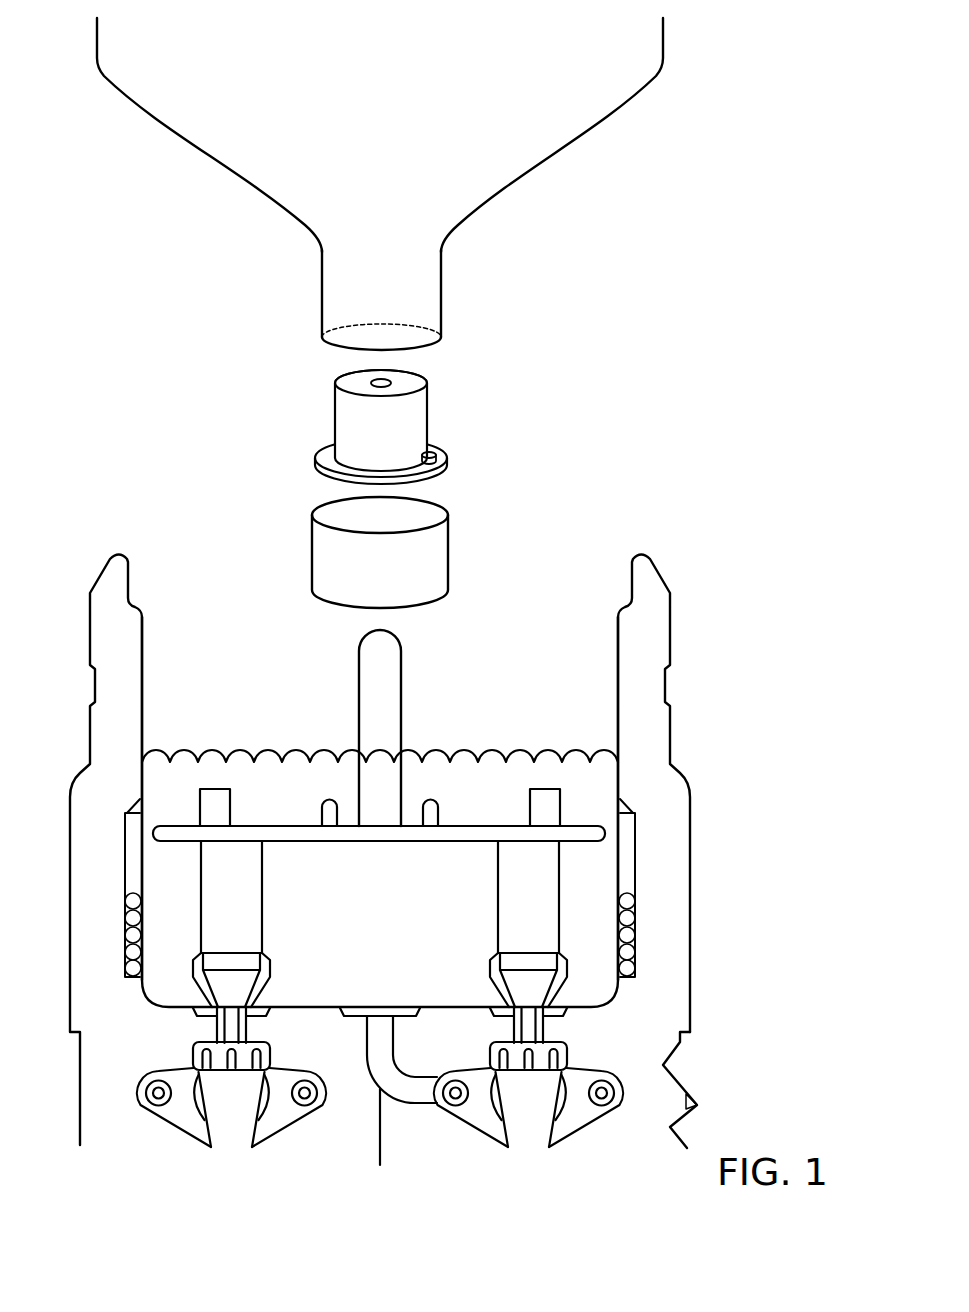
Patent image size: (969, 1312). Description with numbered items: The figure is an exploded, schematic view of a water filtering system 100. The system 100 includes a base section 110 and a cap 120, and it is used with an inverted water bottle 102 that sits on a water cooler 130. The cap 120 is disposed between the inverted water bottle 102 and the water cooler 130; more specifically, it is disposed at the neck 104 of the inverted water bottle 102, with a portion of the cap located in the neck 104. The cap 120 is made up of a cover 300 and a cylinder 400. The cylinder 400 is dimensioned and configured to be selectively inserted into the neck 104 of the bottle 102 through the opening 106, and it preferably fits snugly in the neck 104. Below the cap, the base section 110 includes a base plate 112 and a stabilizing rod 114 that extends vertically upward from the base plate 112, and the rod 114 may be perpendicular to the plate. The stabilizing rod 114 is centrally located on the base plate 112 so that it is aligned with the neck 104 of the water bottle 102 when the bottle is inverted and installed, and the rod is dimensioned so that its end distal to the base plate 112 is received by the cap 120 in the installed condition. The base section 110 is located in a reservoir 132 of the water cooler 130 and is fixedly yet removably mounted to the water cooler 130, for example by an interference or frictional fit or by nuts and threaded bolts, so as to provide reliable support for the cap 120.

The water filtering system 100 is at (135, 343).
The inverted water bottle 102 is at (663, 63).
The neck 104 is at (441, 311).
The opening 106 is at (347, 352).
The cap 120 is at (270, 487).
The cylinder 400 is at (427, 418).
The cover 300 is at (448, 567).
The base section 110 is at (288, 653).
The reservoir 132 is at (593, 893).
The stabilizing rod 114 is at (402, 710).
The base plate 112 is at (300, 826).
The water cooler 130 is at (690, 975).